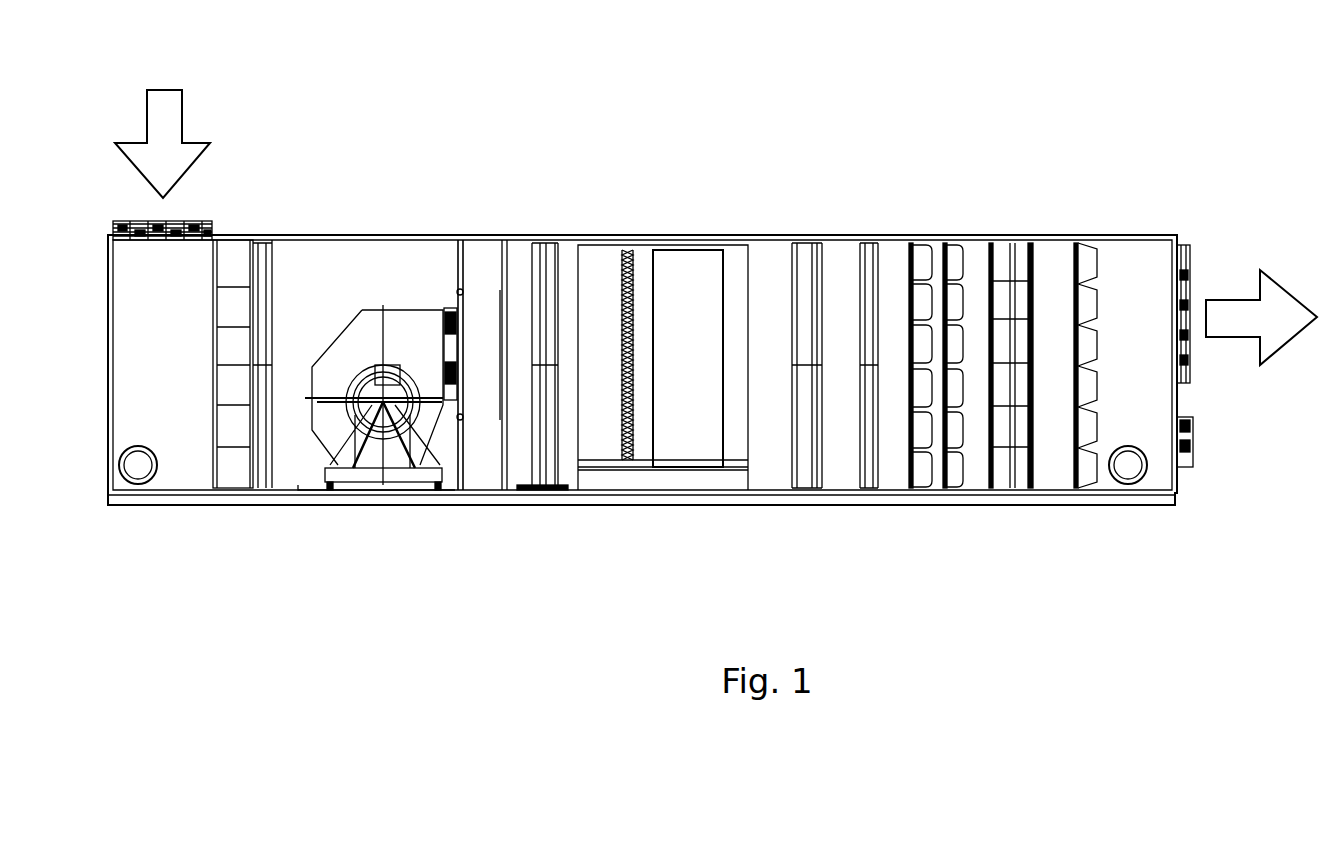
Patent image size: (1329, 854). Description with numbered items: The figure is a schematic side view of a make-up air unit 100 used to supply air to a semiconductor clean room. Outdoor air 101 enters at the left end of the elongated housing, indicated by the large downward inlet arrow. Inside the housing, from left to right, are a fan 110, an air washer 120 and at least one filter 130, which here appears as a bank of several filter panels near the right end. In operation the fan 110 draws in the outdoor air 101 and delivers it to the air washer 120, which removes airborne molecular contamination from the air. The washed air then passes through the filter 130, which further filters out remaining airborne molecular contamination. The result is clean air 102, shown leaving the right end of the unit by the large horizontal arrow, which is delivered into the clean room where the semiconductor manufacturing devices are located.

The make-up air unit 100 is at (832, 152).
The outdoor air 101 is at (162, 148).
The clean air 102 is at (1235, 337).
The fan 110 is at (367, 237).
The air washer 120 is at (660, 240).
The filter 130 is at (962, 238).